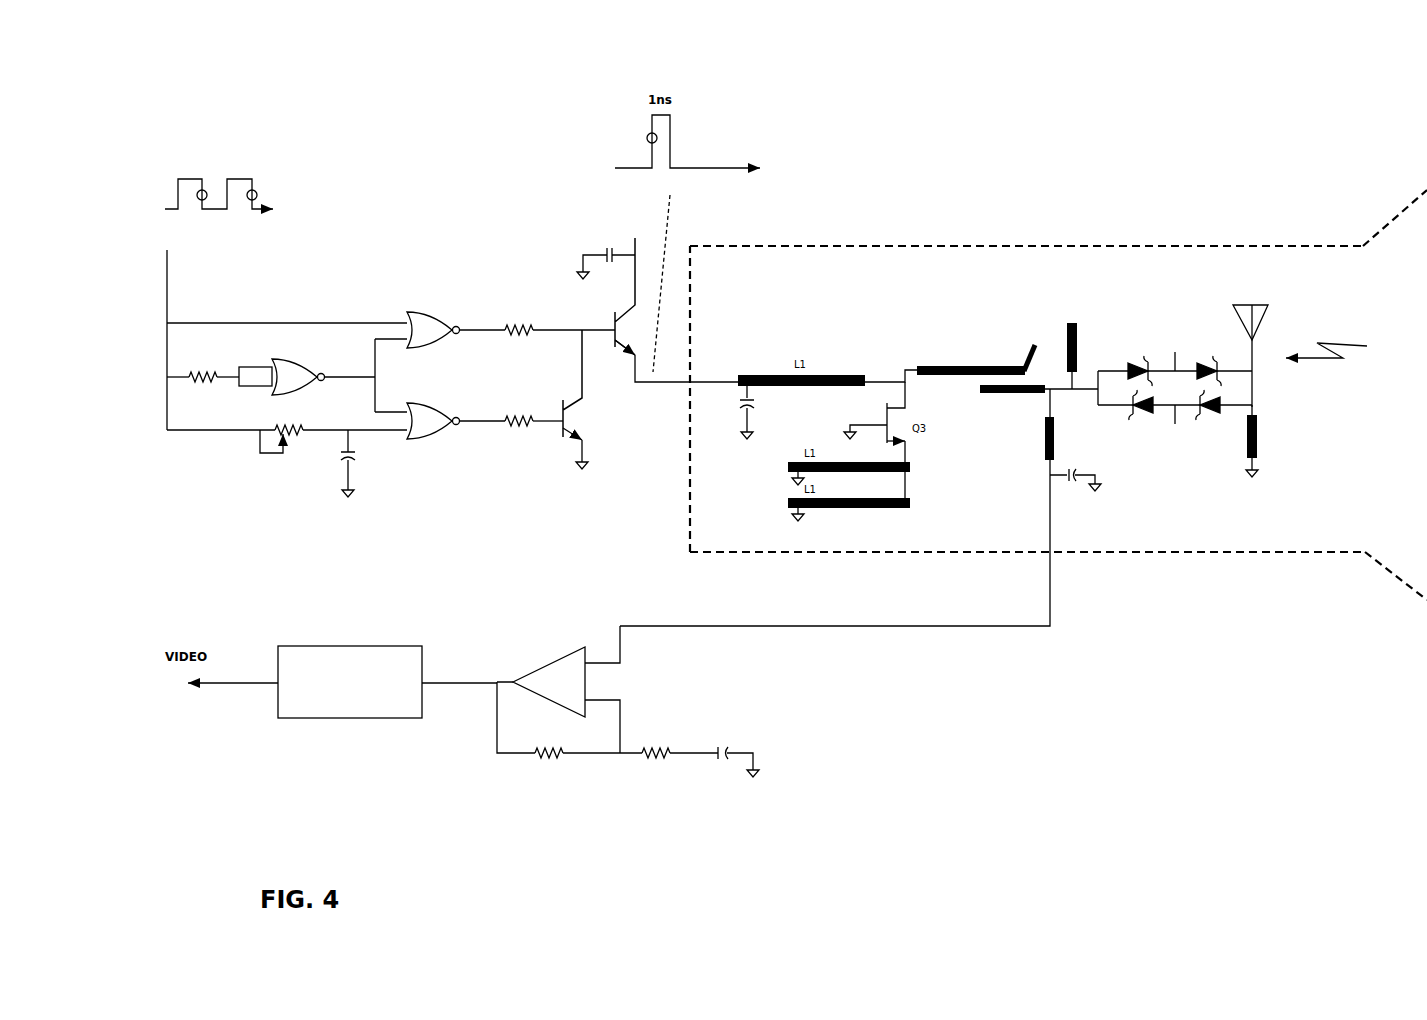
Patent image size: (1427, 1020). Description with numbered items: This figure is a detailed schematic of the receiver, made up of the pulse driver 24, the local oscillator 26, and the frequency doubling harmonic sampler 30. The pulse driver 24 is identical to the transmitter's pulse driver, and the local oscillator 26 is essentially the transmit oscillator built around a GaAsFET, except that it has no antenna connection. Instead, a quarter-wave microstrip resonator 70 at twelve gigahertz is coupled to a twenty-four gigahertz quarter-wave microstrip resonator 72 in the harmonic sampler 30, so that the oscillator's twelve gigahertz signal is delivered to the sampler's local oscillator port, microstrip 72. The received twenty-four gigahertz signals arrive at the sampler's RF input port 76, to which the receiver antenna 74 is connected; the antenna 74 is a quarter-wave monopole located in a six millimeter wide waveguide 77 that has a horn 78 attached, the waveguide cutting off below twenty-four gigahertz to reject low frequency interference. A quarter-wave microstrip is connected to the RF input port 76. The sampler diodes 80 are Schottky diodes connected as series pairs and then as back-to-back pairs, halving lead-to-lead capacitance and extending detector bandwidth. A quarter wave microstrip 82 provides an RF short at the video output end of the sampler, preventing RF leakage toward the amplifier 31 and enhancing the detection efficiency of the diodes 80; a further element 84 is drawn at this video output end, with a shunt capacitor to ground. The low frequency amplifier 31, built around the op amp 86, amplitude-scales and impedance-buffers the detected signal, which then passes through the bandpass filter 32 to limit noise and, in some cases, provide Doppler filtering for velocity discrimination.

The pulse driver 24 is at (332, 168).
The local oscillator 26 is at (921, 190).
The frequency doubling harmonic sampler 30 is at (1158, 625).
The low frequency amplifier 31 is at (622, 792).
The bandpass filter 32 is at (352, 718).
The quarter-wave microstrip resonator 70 is at (953, 362).
The quarter-wave microstrip resonator 72 is at (995, 398).
The receiver antenna 74 is at (1250, 302).
The RF input port 76 is at (1257, 387).
The waveguide 77 is at (1182, 243).
The horn 78 is at (1392, 220).
The sampler diodes 80 is at (1178, 465).
The quarter wave microstrip 82 is at (1067, 313).
The hold capacitor 84 is at (1077, 507).
The op amp 86 is at (552, 660).